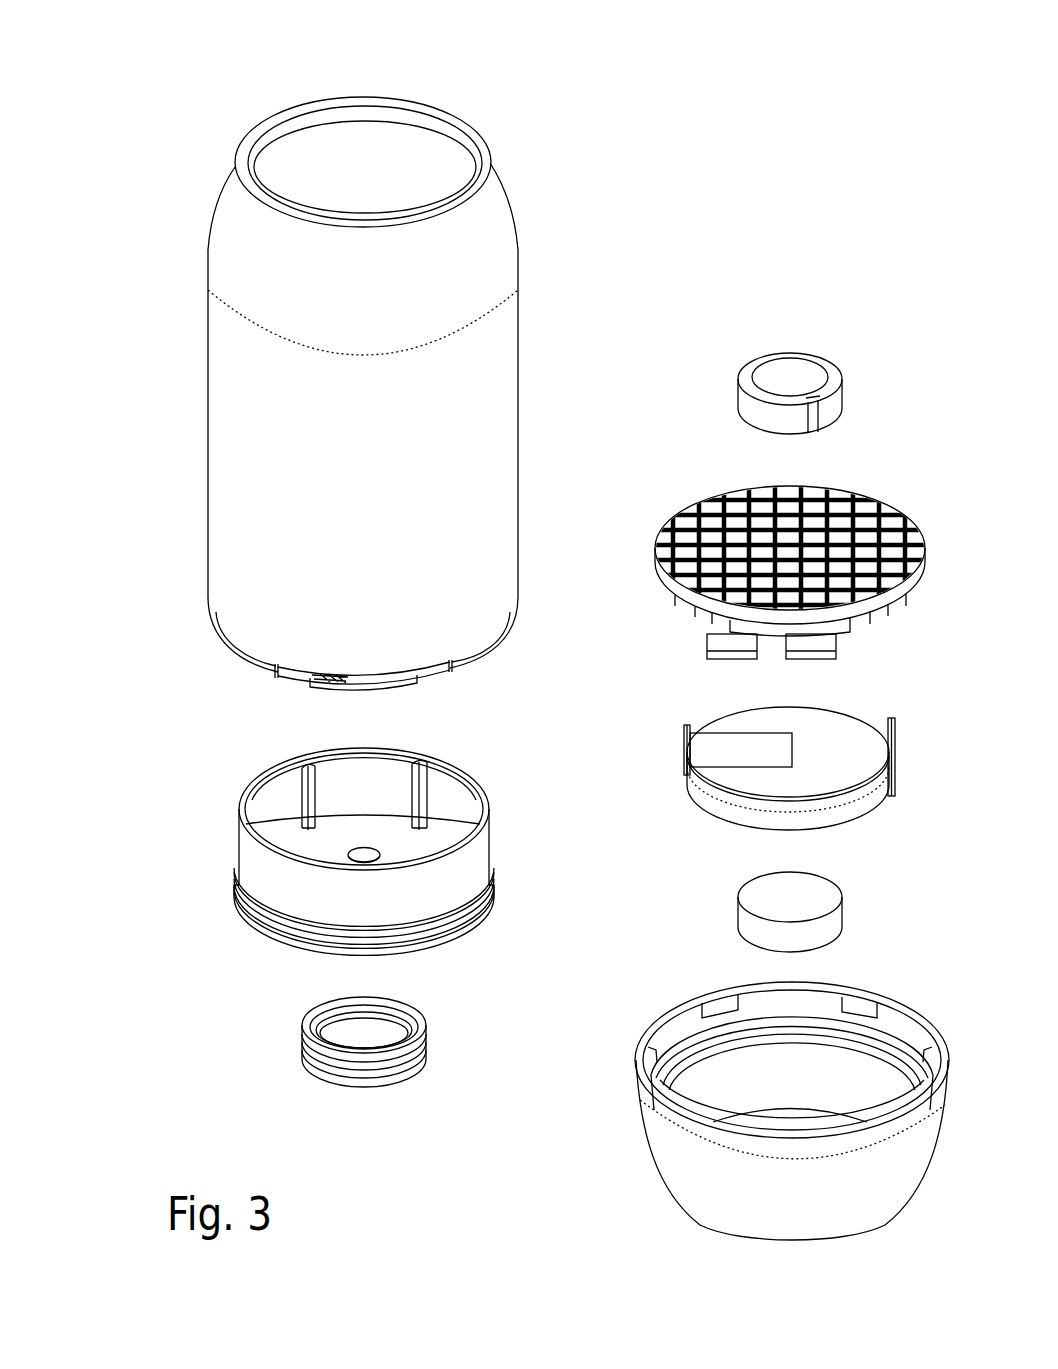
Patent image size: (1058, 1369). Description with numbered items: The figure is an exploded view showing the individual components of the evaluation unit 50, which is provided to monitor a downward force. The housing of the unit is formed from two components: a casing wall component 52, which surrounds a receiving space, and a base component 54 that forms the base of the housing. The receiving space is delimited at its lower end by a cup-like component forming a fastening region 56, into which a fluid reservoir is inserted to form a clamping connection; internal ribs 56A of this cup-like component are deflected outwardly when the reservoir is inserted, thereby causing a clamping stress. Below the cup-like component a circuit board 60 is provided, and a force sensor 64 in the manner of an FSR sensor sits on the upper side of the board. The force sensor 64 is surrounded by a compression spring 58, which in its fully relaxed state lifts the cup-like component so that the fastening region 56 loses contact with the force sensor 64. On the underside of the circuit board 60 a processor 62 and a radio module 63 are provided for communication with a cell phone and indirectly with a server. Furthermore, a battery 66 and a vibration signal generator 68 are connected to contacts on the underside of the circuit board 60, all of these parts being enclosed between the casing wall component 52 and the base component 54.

The evaluation unit 50 is at (174, 95).
The casing wall component 52 is at (238, 378).
The base component 54 is at (633, 1130).
The fastening region 56 is at (240, 782).
The internal ribs 56A is at (420, 790).
The compression spring 58 is at (298, 1028).
The circuit board 60 is at (695, 492).
The processor 62 is at (733, 662).
The radio module 63 is at (800, 663).
The force sensor 64 is at (735, 375).
The battery 66 is at (845, 727).
The vibration signal generator 68 is at (823, 900).